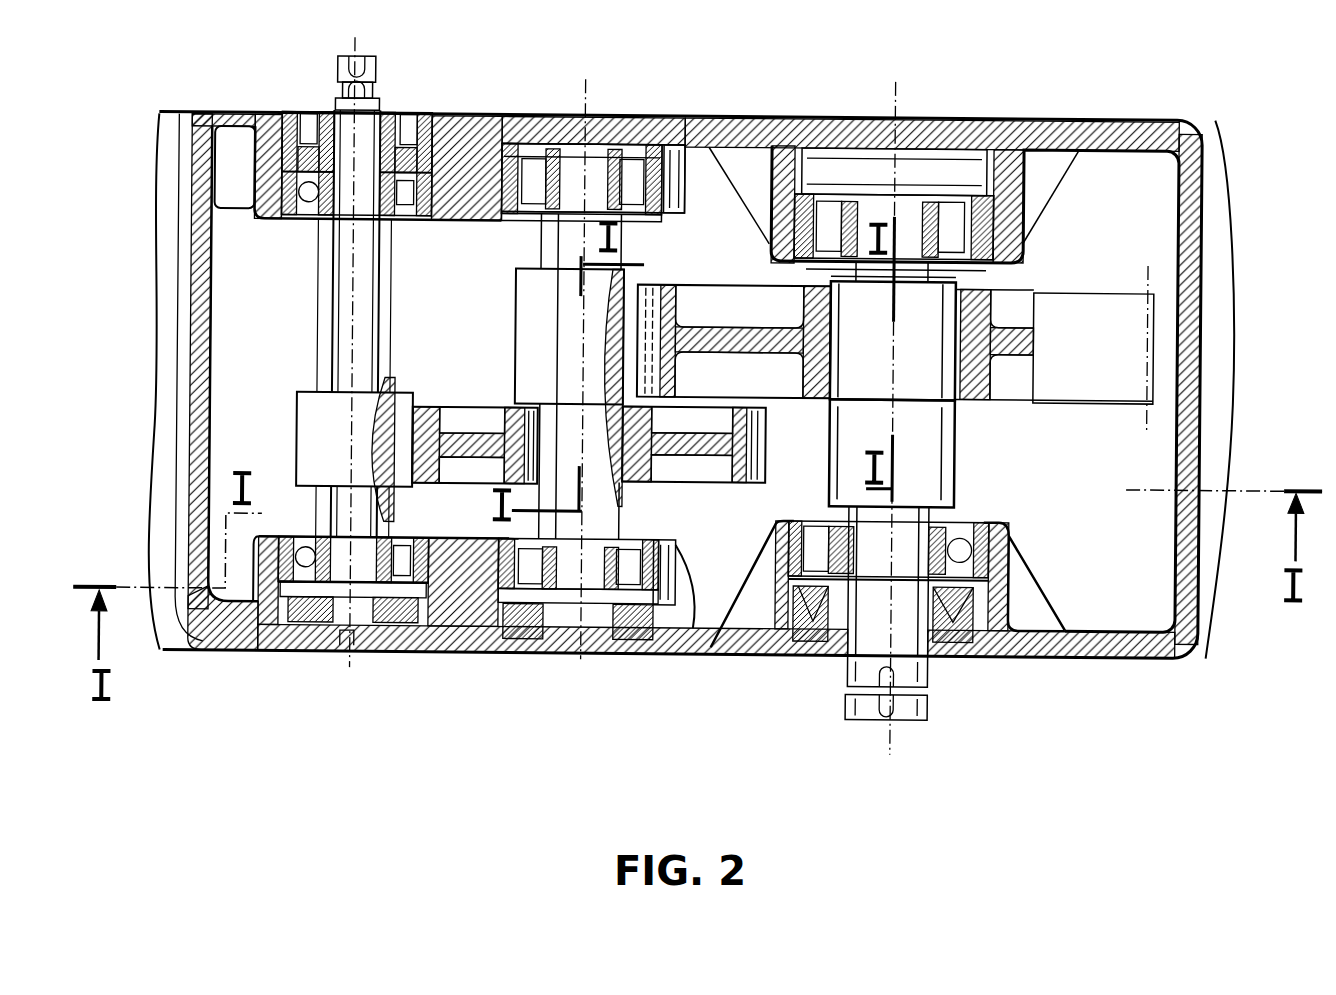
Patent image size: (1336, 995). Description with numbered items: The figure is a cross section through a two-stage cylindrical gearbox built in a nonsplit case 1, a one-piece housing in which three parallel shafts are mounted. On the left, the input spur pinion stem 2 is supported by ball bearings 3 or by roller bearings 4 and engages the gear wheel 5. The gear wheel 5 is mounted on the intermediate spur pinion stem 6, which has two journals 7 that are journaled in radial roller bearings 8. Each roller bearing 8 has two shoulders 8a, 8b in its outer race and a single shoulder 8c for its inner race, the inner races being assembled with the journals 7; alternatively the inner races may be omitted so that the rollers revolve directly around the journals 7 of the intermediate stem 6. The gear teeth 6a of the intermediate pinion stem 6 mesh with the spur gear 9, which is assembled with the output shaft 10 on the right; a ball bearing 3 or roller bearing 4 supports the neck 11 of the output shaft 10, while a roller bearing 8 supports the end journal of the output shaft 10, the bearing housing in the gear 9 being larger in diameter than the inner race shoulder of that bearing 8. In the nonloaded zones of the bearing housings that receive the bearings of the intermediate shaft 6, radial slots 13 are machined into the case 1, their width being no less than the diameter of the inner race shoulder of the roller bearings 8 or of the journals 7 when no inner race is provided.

The nonsplit case 1 is at (197, 416).
The input spur pinion stem 2 is at (337, 332).
The ball bearings 3 is at (250, 603).
The roller bearings 4 is at (390, 617).
The gear wheel 5 is at (462, 473).
The intermediate spur pinion stem 6 is at (508, 605).
The gear teeth 6a is at (520, 371).
The journals 7 is at (567, 173).
The radial roller bearings 8 is at (950, 228).
The shoulder 8a is at (517, 231).
The shoulder 8b is at (490, 165).
The single shoulder 8c is at (495, 610).
The spur gear 9 is at (768, 371).
The output shaft 10 is at (921, 720).
The neck 11 is at (953, 505).
The radial slots 13 is at (667, 173).